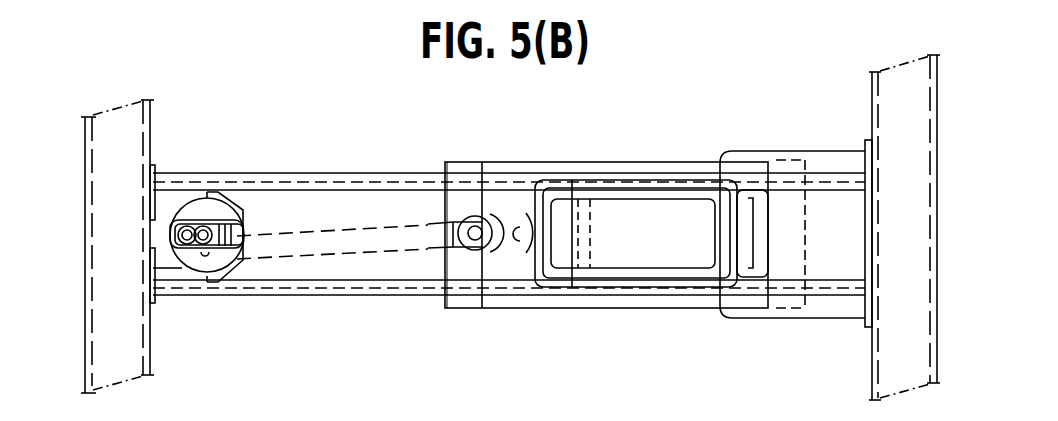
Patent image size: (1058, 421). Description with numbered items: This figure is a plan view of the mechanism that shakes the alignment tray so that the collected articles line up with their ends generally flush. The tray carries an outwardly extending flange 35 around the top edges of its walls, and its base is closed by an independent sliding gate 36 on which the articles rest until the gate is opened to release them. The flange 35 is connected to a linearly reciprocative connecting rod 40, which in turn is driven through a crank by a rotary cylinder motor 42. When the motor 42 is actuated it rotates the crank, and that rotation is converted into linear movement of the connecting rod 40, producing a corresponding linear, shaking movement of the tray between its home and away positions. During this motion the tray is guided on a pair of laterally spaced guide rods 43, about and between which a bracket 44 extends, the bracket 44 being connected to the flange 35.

The flange 35 is at (505, 167).
The sliding gate 36 is at (620, 218).
The connecting rod 40 is at (370, 251).
The rotary cylinder motor 42 is at (211, 193).
The guide rods 43 is at (369, 173).
The bracket 44 is at (772, 297).